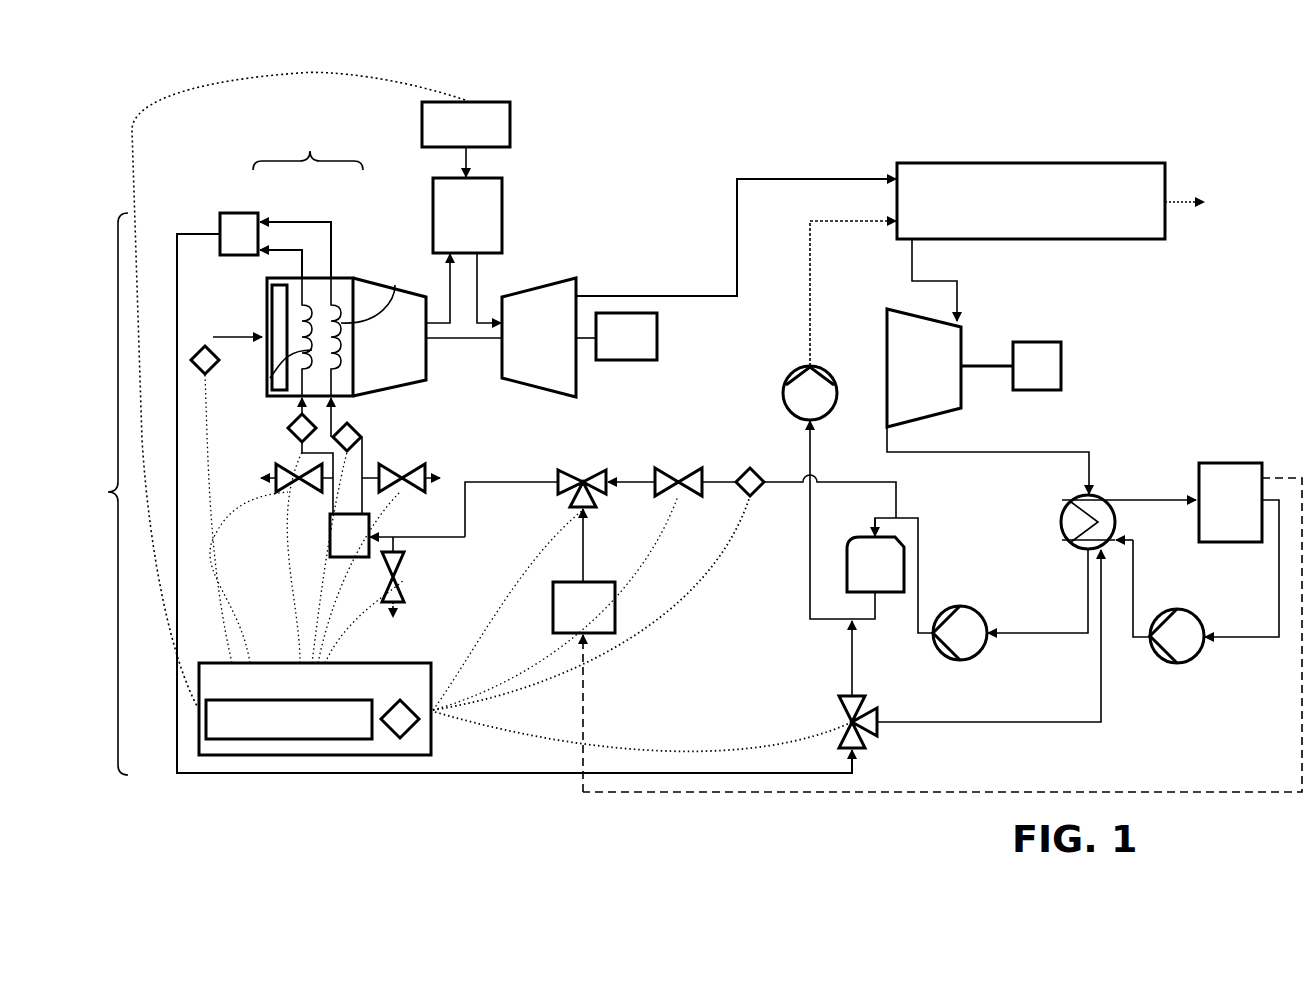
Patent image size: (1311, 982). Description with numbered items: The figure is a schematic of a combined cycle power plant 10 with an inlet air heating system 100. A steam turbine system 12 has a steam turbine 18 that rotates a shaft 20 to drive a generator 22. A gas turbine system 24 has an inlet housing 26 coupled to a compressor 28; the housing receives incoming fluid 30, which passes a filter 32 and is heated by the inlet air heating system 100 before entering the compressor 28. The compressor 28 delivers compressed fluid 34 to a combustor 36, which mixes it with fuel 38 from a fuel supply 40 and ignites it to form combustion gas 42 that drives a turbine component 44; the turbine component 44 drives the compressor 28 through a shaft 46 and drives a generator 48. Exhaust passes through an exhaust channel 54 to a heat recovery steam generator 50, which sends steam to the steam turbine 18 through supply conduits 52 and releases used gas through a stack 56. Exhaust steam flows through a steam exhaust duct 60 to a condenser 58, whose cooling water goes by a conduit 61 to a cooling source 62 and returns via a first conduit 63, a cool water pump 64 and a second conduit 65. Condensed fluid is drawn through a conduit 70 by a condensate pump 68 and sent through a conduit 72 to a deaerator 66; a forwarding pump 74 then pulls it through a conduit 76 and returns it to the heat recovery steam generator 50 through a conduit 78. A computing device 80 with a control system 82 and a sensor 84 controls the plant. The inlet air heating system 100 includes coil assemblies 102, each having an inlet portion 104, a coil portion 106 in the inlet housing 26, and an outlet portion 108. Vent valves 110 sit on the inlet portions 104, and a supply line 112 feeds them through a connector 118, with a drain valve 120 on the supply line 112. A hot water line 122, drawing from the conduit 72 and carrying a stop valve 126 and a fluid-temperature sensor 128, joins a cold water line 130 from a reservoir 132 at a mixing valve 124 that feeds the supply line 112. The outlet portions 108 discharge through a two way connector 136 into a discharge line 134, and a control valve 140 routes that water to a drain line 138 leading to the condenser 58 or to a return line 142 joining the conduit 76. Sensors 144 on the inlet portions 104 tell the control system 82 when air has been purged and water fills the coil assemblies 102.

The combined cycle power plant 10 is at (746, 136).
The steam turbine system 12 is at (1011, 369).
The steam turbine 18 is at (924, 368).
The shaft 20 is at (988, 368).
The generator 22 is at (1037, 366).
The gas turbine system 24 is at (678, 337).
The inlet housing 26 is at (325, 316).
The compressor 28 is at (389, 337).
The fluid 30 is at (222, 336).
The filter 32 is at (268, 290).
The compressed fluid 34 is at (446, 340).
The combustor 36 is at (467, 215).
The fuel 38 is at (474, 172).
The fuel supply 40 is at (466, 124).
The combustion gas 42 is at (490, 340).
The turbine component 44 is at (539, 337).
The shaft 46 is at (457, 342).
The generator 48 is at (616, 336).
The heat recovery steam generator 50 is at (1031, 201).
The supply conduits 52 is at (962, 282).
The exhaust channel 54 is at (734, 216).
The stack 56 is at (1177, 200).
The condenser 58 is at (1068, 504).
The steam exhaust duct 60 is at (1090, 460).
The conduit 61 is at (1165, 500).
The cooling source 62 is at (1230, 502).
The first conduit 63 is at (1248, 640).
The cool water pump 64 is at (1172, 664).
The second conduit 65 is at (1134, 556).
The deaerator 66 is at (875, 564).
The condensate pump 68 is at (965, 606).
The conduit 70 is at (1087, 594).
The conduit 72 is at (918, 542).
The forwarding pump 74 is at (790, 366).
The conduit 76 is at (804, 594).
The conduit 78 is at (810, 242).
The computing device 80 is at (525, 603).
The control system 82 is at (289, 719).
The sensor 84 is at (194, 353).
The inlet air heating system 100 is at (87, 494).
The coil assemblies 102 is at (308, 145).
The inlet portion 104 is at (300, 453).
The coil portion 106 is at (345, 276).
The outlet portion 108 is at (288, 246).
The vent valves 110 is at (428, 470).
The supply line 112 is at (502, 483).
The connector 118 is at (335, 497).
The drain valve 120 is at (398, 578).
The hot water line 122 is at (788, 490).
The mixing valve 124 is at (600, 456).
The stop valve 126 is at (690, 454).
The fluid-temperature sensor 128 is at (744, 468).
The cold water line 130 is at (584, 549).
The reservoir 132 is at (927, 635).
The discharge line 134 is at (183, 232).
The two way connector 136 is at (239, 234).
The drain line 138 is at (972, 722).
The control valve 140 is at (840, 710).
The return line 142 is at (842, 662).
The sensors 144 is at (290, 428).